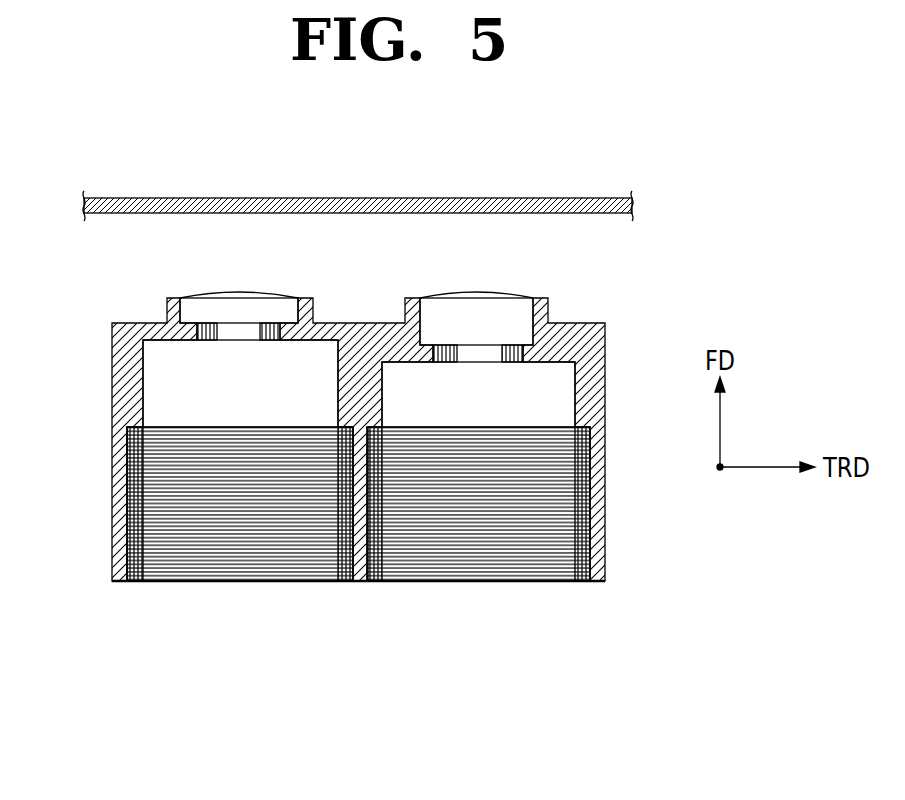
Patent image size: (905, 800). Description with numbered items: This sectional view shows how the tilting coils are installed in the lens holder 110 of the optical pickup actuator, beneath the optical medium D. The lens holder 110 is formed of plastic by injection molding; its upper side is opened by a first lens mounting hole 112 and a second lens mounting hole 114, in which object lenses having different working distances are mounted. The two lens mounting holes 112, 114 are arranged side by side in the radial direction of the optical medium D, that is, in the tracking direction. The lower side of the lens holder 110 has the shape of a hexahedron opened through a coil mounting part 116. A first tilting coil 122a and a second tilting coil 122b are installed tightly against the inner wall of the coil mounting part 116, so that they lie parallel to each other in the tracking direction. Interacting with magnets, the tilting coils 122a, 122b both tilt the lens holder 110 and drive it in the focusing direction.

The lens holder 110 is at (128, 375).
The first lens mounting hole 112 is at (290, 306).
The second lens mounting hole 114 is at (525, 308).
The coil mounting part 116 is at (470, 527).
The first tilting coil 122a is at (172, 430).
The second tilting coil 122b is at (567, 553).
The optical medium D is at (563, 198).